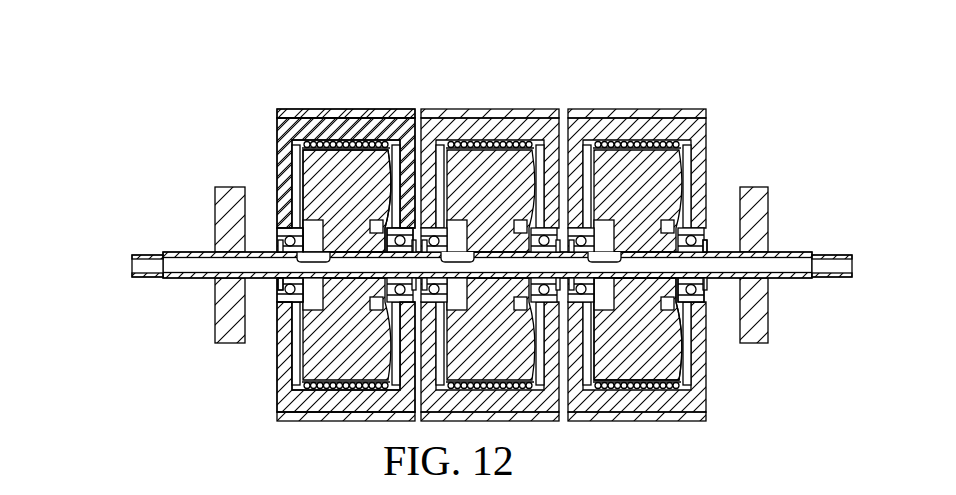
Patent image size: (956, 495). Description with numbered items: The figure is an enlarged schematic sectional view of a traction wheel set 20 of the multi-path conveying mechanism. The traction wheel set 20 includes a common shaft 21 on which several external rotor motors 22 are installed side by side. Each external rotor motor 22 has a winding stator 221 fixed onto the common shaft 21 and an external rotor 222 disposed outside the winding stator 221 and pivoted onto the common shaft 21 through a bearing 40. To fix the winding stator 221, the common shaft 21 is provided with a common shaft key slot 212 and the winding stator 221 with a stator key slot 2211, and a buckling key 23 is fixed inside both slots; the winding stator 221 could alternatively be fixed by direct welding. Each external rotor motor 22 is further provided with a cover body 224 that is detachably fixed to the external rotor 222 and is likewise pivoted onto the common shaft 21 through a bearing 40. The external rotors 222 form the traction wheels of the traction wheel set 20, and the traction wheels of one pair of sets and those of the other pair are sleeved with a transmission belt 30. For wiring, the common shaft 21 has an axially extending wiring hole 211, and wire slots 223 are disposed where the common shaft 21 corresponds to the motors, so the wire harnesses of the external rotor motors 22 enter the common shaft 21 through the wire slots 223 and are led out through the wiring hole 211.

The traction wheel set 20 is at (138, 52).
The common shaft 21 is at (137, 236).
The wiring hole 211 is at (157, 264).
The common shaft key slot 212 is at (705, 243).
The external rotor motor 22 is at (262, 106).
The winding stator 221 is at (320, 175).
The stator key slot 2211 is at (645, 298).
The external rotor 222 is at (322, 128).
The wire slot 223 is at (280, 283).
The cover body 224 is at (283, 166).
The buckling key 23 is at (705, 295).
The transmission belt 30 is at (375, 115).
The bearing 40 is at (372, 238).